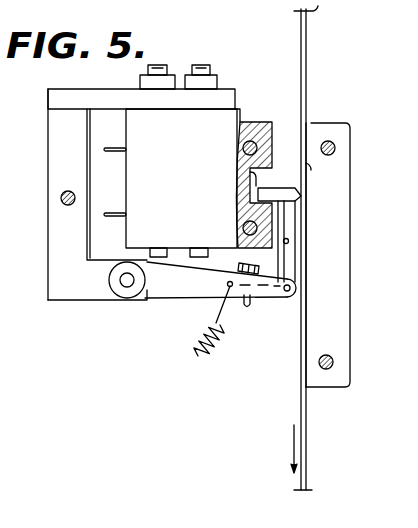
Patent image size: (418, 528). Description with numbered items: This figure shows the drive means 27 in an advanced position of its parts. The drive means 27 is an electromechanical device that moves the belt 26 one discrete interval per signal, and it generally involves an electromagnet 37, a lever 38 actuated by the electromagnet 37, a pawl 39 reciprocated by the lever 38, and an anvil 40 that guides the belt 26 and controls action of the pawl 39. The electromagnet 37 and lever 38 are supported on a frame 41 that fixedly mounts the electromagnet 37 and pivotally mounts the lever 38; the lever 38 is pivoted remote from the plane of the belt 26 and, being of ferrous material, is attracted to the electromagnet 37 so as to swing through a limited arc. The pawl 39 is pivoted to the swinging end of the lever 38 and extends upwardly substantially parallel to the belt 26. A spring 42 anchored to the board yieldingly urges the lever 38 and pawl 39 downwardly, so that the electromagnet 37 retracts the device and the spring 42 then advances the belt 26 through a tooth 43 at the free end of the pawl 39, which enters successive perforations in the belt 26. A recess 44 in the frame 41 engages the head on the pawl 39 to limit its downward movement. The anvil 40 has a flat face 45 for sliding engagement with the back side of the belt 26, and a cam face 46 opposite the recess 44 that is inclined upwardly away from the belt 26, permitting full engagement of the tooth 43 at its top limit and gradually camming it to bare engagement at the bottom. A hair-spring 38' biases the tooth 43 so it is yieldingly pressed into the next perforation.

The belt 26 is at (314, 447).
The drive means 27 is at (246, 68).
The electromagnet 37 is at (203, 175).
The lever 38 is at (202, 293).
The hair-spring 38' is at (254, 308).
The pawl 39 is at (297, 226).
The anvil 40 is at (339, 322).
The frame 41 is at (93, 97).
The spring 42 is at (200, 357).
The tooth 43 is at (294, 193).
The recess 44 is at (250, 184).
The flat face 45 is at (302, 342).
The cam face 46 is at (308, 168).